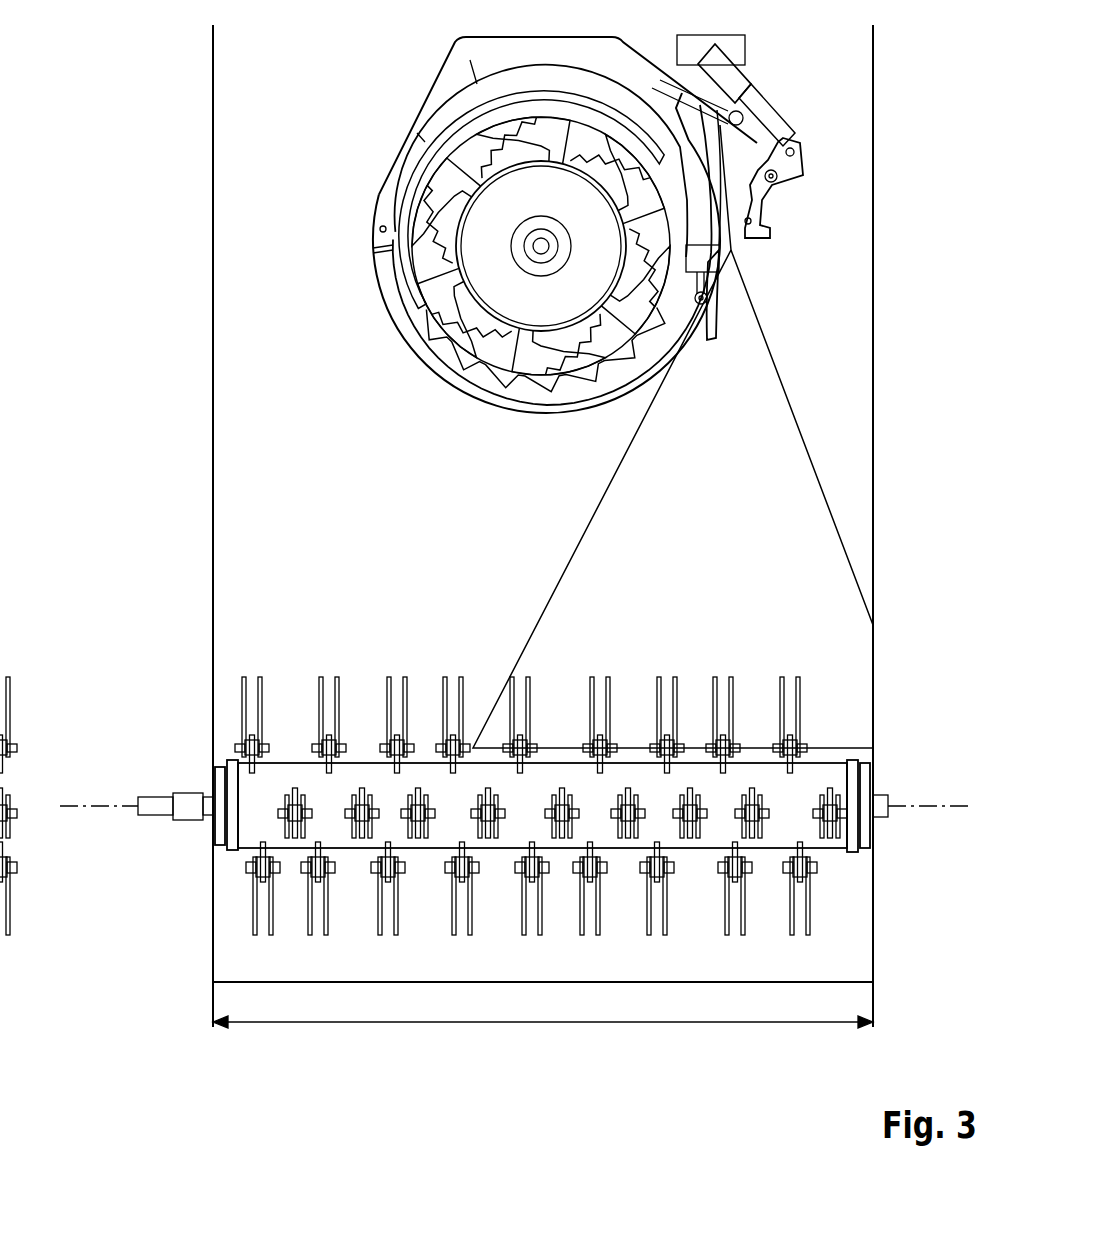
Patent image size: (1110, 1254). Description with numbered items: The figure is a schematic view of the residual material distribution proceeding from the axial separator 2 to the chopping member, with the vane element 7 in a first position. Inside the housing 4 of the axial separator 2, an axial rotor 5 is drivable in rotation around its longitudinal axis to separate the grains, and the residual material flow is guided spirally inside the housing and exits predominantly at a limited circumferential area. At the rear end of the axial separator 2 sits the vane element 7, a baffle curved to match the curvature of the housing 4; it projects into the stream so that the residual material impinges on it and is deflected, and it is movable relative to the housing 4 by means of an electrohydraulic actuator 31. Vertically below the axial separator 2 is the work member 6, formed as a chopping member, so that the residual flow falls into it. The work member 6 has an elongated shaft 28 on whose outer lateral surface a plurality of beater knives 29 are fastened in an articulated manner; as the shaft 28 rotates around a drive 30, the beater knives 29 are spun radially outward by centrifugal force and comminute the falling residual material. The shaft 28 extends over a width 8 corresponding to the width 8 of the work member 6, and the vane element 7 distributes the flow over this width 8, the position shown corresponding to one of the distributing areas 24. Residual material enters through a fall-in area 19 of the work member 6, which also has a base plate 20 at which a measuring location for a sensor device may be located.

The axial separator 2 is at (385, 112).
The housing 4 is at (437, 70).
The axial rotor 5 is at (430, 261).
The work member 6 is at (485, 772).
The vane element 7 is at (725, 300).
The width 8 is at (543, 1025).
The fall-in area 19 is at (440, 609).
The base plate 20 is at (630, 985).
The distributing areas 24 is at (770, 412).
The shaft 28 is at (437, 835).
The beater knives 29 is at (267, 688).
The drive 30 is at (100, 808).
The electrohydraulic actuator 31 is at (770, 108).